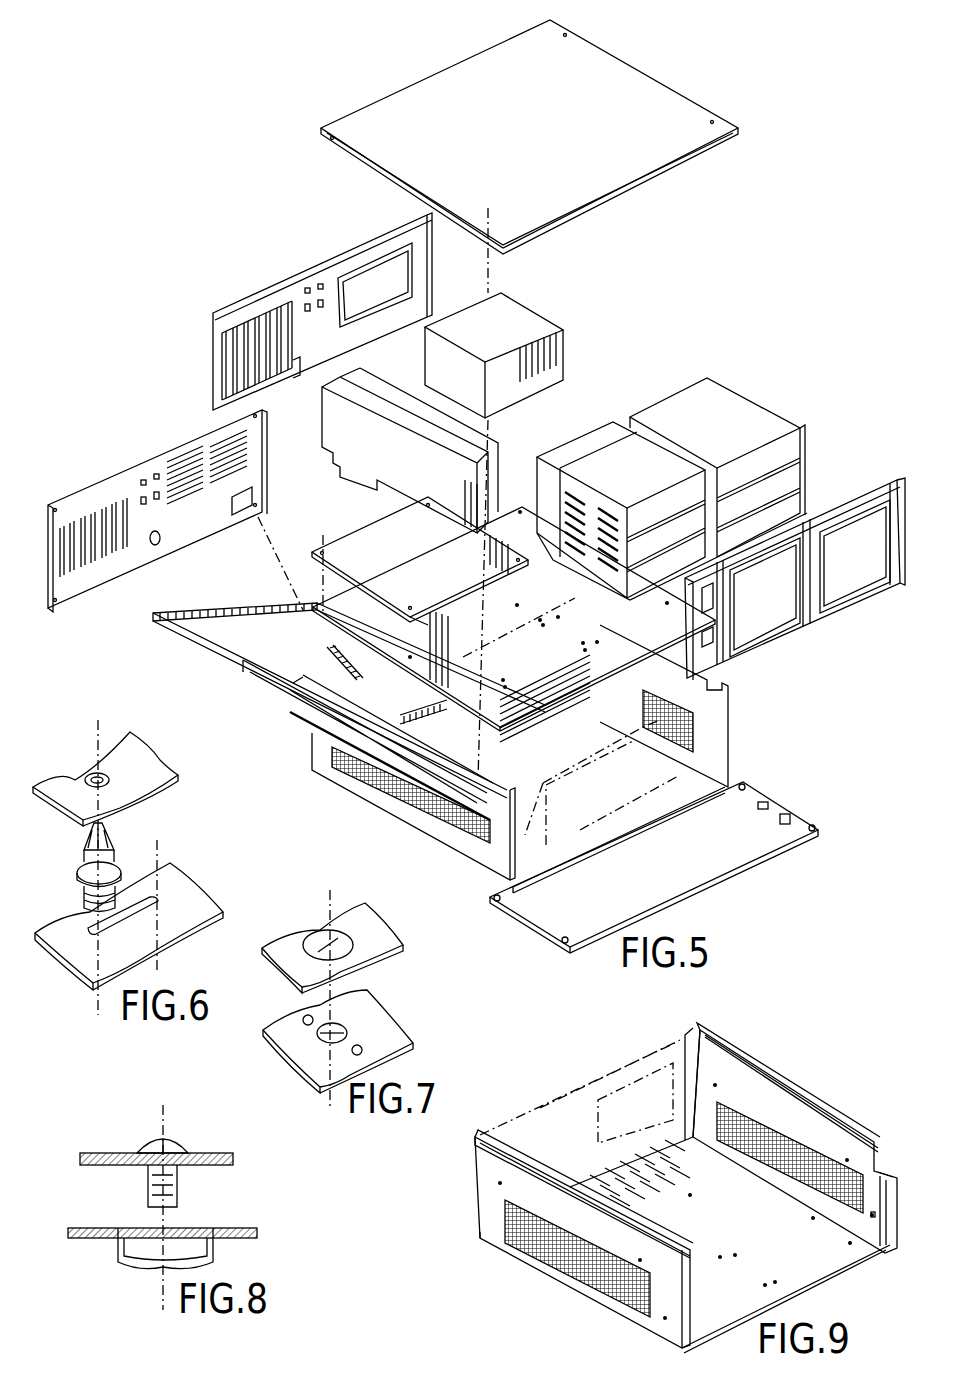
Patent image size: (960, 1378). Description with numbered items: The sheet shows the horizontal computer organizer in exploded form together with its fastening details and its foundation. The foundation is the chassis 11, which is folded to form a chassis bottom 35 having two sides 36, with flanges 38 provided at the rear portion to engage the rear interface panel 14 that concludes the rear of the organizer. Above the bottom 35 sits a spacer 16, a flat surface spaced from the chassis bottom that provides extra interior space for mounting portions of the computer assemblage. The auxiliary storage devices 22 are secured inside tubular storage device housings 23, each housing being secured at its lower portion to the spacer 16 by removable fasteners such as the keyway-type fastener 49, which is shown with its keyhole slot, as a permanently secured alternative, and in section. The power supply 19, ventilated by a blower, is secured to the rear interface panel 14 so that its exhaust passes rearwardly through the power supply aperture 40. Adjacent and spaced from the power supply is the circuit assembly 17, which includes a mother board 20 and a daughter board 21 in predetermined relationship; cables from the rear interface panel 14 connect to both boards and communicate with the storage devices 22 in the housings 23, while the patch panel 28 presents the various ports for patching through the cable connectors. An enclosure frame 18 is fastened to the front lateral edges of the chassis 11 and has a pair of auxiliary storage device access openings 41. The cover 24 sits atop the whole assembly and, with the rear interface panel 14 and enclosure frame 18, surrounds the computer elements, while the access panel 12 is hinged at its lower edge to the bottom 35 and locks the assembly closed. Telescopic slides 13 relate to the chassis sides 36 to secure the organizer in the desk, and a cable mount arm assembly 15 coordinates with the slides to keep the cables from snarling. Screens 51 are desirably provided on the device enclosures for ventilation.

In FIG. 5, the chassis 11 is at (728, 733).
In FIG. 9, the chassis 11 is at (780, 1080).
In FIG. 5, the access panel 12 is at (770, 857).
In FIG. 5, the telescopic slides 13 is at (290, 700).
In FIG. 5, the rear interface panel 14 is at (285, 303).
In FIG. 5, the cable mount arm assembly 15 is at (223, 607).
In FIG. 5, the spacer 16 is at (570, 616).
In FIG. 5, the circuit assembly 17 is at (355, 528).
In FIG. 5, the enclosure frame 18 is at (872, 505).
In FIG. 5, the power supply 19 is at (570, 322).
In FIG. 5, the mother board 20 is at (404, 566).
In FIG. 5, the daughter board 21 is at (378, 461).
In FIG. 5, the auxiliary storage devices 22 is at (780, 447).
In FIG. 5, the storage device housing 23 is at (722, 405).
In FIG. 5, the cover 24 is at (512, 128).
In FIG. 5, the patch panel 28 is at (128, 482).
In FIG. 9, the chassis bottom 35 is at (700, 1233).
In FIG. 9, the chassis sides 36 is at (883, 1160).
In FIG. 9, the flanges 38 is at (690, 1057).
In FIG. 5, the power supply aperture 40 is at (397, 295).
In FIG. 5, the auxiliary storage device access openings 41 is at (742, 618).
In FIG. 6, the fastener 49 is at (200, 887).
In FIG. 5, the screens 51 is at (700, 723).
In FIG. 9, the screens 51 is at (793, 1155).